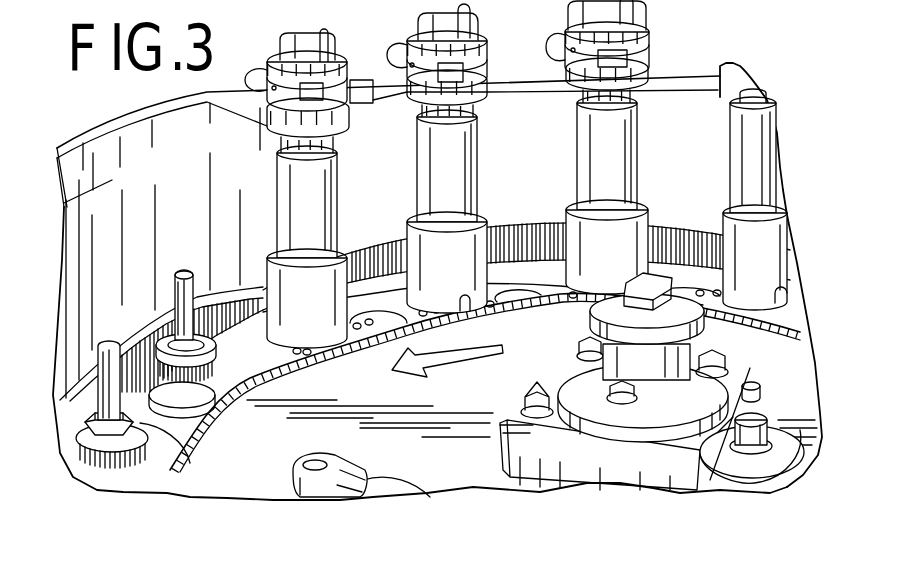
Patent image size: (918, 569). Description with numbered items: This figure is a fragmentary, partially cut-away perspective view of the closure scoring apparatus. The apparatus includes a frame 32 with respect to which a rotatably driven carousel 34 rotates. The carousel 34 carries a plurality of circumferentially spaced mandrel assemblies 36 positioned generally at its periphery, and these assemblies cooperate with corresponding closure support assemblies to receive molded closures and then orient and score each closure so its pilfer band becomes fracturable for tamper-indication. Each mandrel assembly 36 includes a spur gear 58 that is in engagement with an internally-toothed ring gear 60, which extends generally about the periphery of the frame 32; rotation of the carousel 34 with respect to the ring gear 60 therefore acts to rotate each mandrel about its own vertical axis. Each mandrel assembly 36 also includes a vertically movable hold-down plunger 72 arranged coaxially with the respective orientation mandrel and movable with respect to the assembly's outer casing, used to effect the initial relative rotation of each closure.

The frame 32 is at (657, 108).
The carousel 34 is at (385, 385).
The mandrel assembly 36 is at (575, 177).
The spur gear 58 is at (207, 410).
The ring gear 60 is at (245, 285).
The hold-down plunger 72 is at (176, 305).